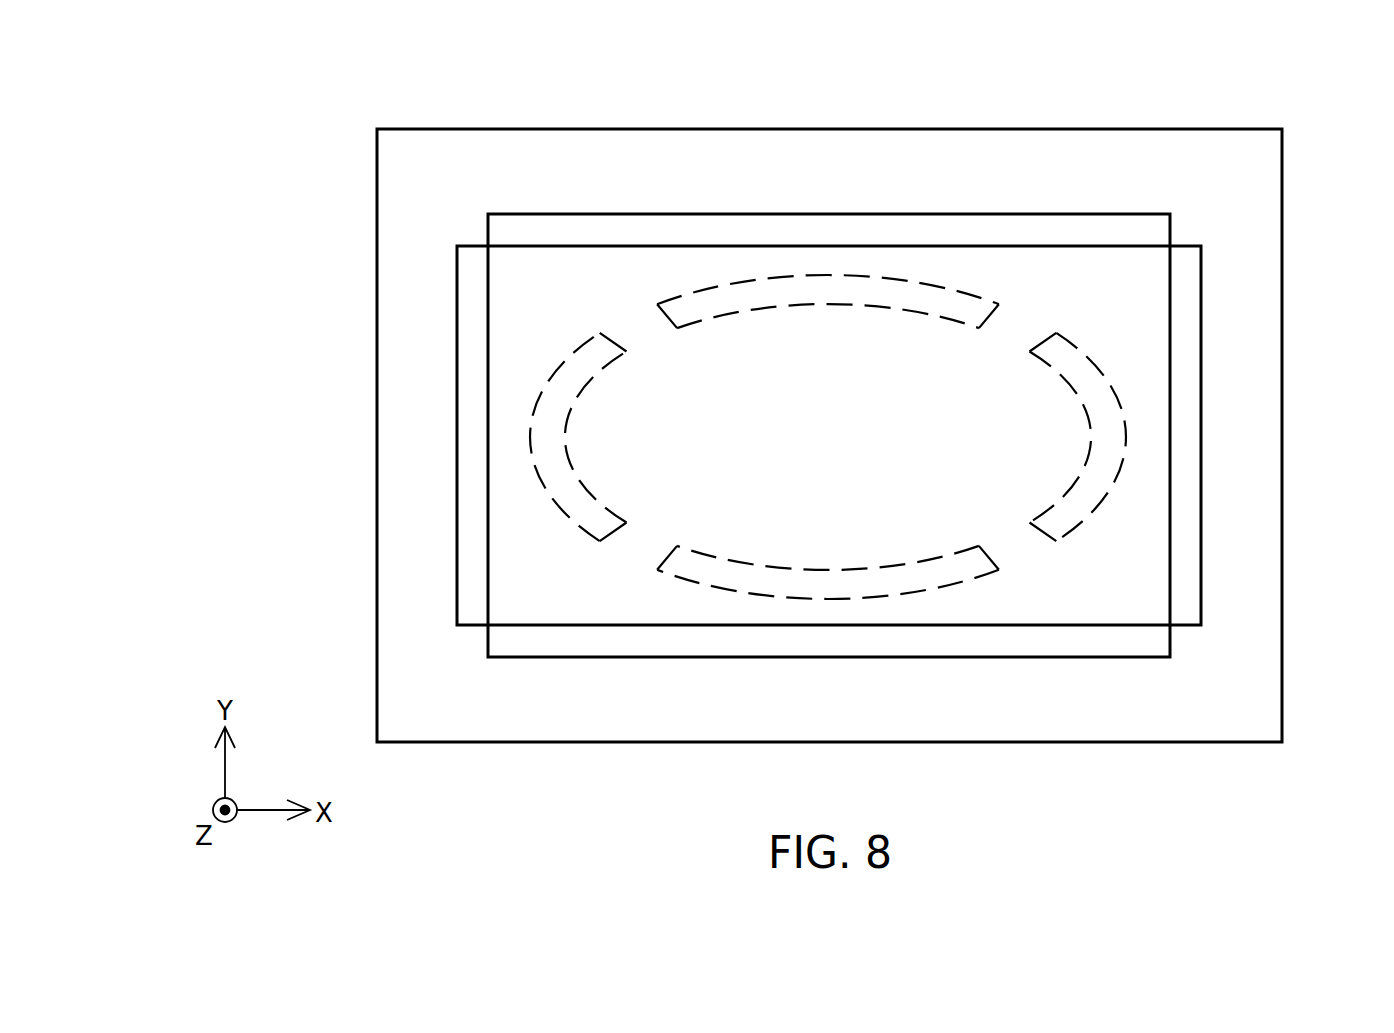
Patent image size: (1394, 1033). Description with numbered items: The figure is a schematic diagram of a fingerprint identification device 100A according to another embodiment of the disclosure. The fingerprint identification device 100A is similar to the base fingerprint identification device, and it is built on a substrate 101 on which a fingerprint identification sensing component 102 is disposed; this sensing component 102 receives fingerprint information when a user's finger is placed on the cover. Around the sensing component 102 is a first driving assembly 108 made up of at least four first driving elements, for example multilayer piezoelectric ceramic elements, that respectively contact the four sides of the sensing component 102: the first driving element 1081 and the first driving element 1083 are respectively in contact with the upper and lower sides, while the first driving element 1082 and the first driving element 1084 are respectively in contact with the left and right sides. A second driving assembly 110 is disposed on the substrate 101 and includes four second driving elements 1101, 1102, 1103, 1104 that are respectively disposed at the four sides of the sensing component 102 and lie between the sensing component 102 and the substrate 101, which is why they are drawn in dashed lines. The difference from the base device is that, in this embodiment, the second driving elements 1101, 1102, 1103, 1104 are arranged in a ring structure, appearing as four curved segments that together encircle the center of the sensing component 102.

The fingerprint identification device 100A is at (225, 56).
The substrate 101 is at (412, 567).
The fingerprint identification sensing component 102 is at (1103, 288).
The first driving assembly 108 is at (205, 147).
The first driving element 1081 is at (1007, 640).
The first driving element 1082 is at (472, 442).
The first driving element 1083 is at (670, 232).
The first driving element 1084 is at (1185, 522).
The second driving assembly 110 is at (205, 288).
The second driving element 1101 is at (750, 575).
The second driving element 1102 is at (582, 503).
The second driving element 1103 is at (828, 293).
The second driving element 1104 is at (1103, 410).